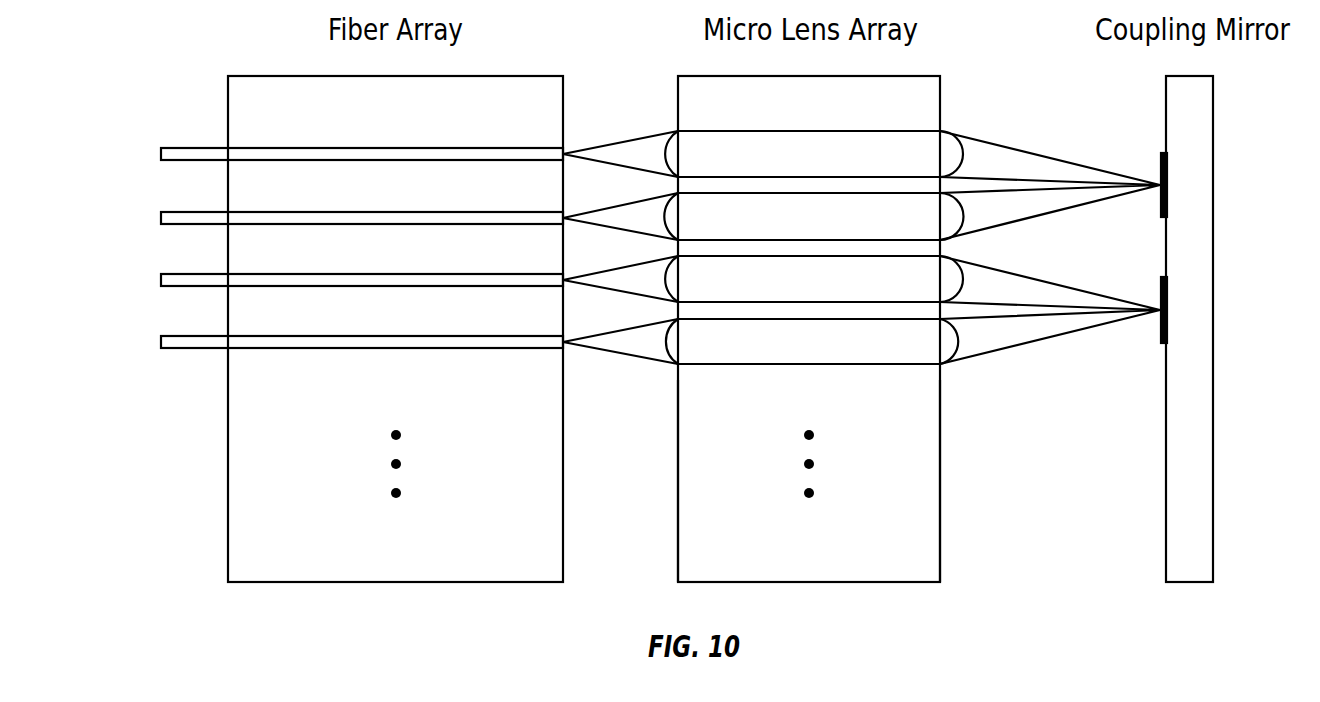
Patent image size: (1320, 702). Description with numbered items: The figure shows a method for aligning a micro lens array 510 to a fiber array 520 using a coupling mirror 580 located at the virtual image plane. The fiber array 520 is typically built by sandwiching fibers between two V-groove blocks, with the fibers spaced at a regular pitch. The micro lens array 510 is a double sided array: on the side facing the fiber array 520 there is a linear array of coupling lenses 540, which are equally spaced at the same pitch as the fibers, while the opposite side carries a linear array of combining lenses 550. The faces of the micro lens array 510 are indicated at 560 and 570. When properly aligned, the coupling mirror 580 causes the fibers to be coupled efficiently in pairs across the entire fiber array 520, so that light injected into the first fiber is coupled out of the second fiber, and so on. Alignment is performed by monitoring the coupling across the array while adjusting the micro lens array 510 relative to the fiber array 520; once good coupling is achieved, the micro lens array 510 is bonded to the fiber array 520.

The micro lens array 510 is at (917, 108).
The fiber array 520 is at (246, 117).
The coupling lenses 540 is at (677, 136).
The combining lenses 550 is at (947, 160).
The input face of micro lens array 560 is at (678, 472).
The output face of micro lens array 570 is at (940, 472).
The coupling mirror 580 is at (1213, 298).